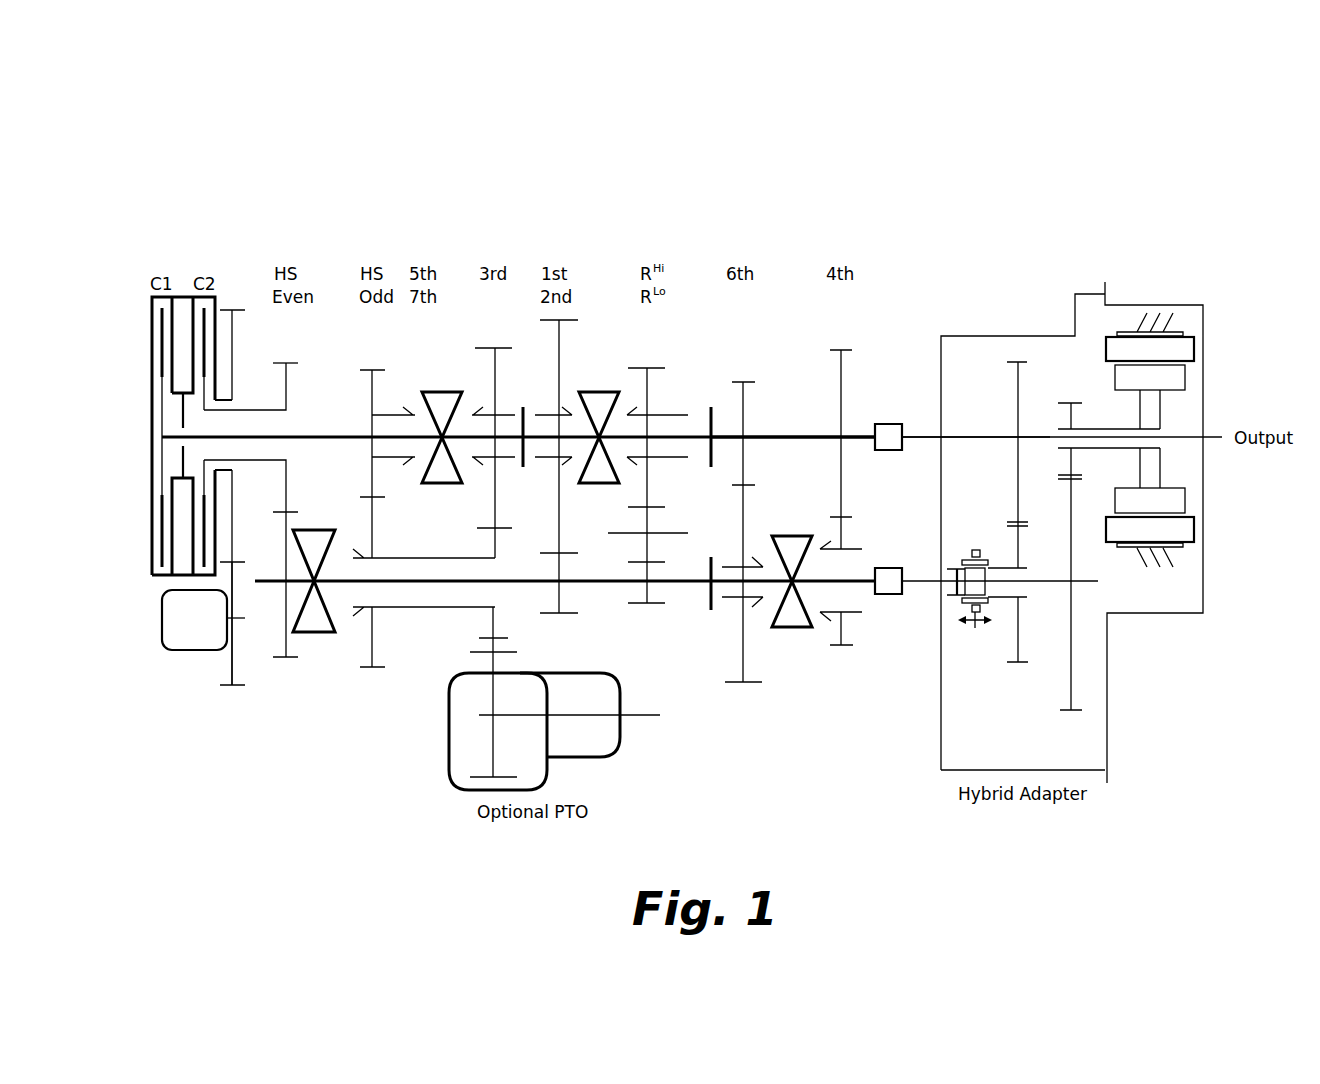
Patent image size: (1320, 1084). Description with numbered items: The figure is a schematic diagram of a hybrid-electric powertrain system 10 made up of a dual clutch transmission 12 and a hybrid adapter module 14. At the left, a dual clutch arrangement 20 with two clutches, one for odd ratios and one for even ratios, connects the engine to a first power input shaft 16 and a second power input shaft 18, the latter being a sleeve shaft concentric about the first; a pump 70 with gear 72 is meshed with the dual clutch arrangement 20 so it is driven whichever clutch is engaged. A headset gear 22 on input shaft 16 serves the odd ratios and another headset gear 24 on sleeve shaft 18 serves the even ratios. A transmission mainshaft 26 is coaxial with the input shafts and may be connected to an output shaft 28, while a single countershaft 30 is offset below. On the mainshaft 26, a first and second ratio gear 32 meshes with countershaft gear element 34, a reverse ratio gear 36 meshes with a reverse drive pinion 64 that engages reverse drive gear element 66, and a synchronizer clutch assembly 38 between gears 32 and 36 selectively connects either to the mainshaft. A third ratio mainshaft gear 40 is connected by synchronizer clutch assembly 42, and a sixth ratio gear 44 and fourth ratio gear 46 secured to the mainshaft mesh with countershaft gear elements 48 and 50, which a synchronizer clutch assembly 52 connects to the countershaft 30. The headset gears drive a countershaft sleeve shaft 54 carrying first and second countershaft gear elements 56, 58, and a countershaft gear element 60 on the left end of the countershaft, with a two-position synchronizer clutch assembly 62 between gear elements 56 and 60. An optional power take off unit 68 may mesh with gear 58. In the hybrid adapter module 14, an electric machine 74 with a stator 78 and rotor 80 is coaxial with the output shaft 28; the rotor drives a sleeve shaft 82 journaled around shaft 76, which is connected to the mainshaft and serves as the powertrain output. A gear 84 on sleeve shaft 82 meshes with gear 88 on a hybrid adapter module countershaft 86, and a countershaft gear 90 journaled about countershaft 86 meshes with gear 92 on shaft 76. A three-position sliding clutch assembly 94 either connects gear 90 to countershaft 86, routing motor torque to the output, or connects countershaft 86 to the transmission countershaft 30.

The hybrid-electric powertrain system 10 is at (855, 200).
The dual clutch transmission 12 is at (540, 190).
The hybrid adapter module 14 is at (1153, 305).
The first power input shaft 16 is at (357, 437).
The second power input shaft 18 is at (277, 408).
The dual clutch arrangement 20 is at (183, 290).
The headset gear 22 is at (372, 368).
The headset gear 24 is at (293, 362).
The transmission mainshaft 26 is at (772, 437).
The output shaft 28 is at (1215, 435).
The countershaft 30 is at (677, 583).
The first ratio and second ratio gear 32 is at (570, 320).
The countershaft gear element 34 is at (558, 610).
The low reverse ratio and high reverse ratio gear 36 is at (640, 368).
The ratio change synchronizer clutch assembly 38 is at (607, 392).
The third ratio mainshaft gear 40 is at (487, 348).
The synchronizer clutch assembly 42 is at (443, 392).
The sixth ratio mainshaft gear 44 is at (747, 382).
The fourth ratio mainshaft gear 46 is at (847, 350).
The gear element 48 is at (753, 682).
The gear element 50 is at (847, 645).
The synchronizer clutch assembly 52 is at (800, 628).
The countershaft sleeve shaft 54 is at (437, 610).
The first countershaft gear element 56 is at (377, 670).
The second countershaft gear element 58 is at (488, 636).
The countershaft gear element 60 is at (277, 660).
The synchronizer clutch assembly 62 is at (314, 636).
The reverse drive pinion 64 is at (648, 553).
The reverse drive gear element 66 is at (658, 605).
The power take off unit 68 is at (623, 728).
The pump 70 is at (162, 628).
The gear 72 is at (232, 673).
The electric machine 74 is at (1175, 592).
The shaft 76 is at (1006, 440).
The stator 78 is at (1197, 348).
The rotor 80 is at (1187, 500).
The sleeve shaft 82 is at (1123, 428).
The gear 84 is at (1065, 403).
The hybrid adapter module countershaft 86 is at (1083, 583).
The gear 88 is at (1073, 712).
The countershaft gear 90 is at (1022, 662).
The gear 92 is at (1012, 364).
The sliding clutch assembly 94 is at (962, 655).